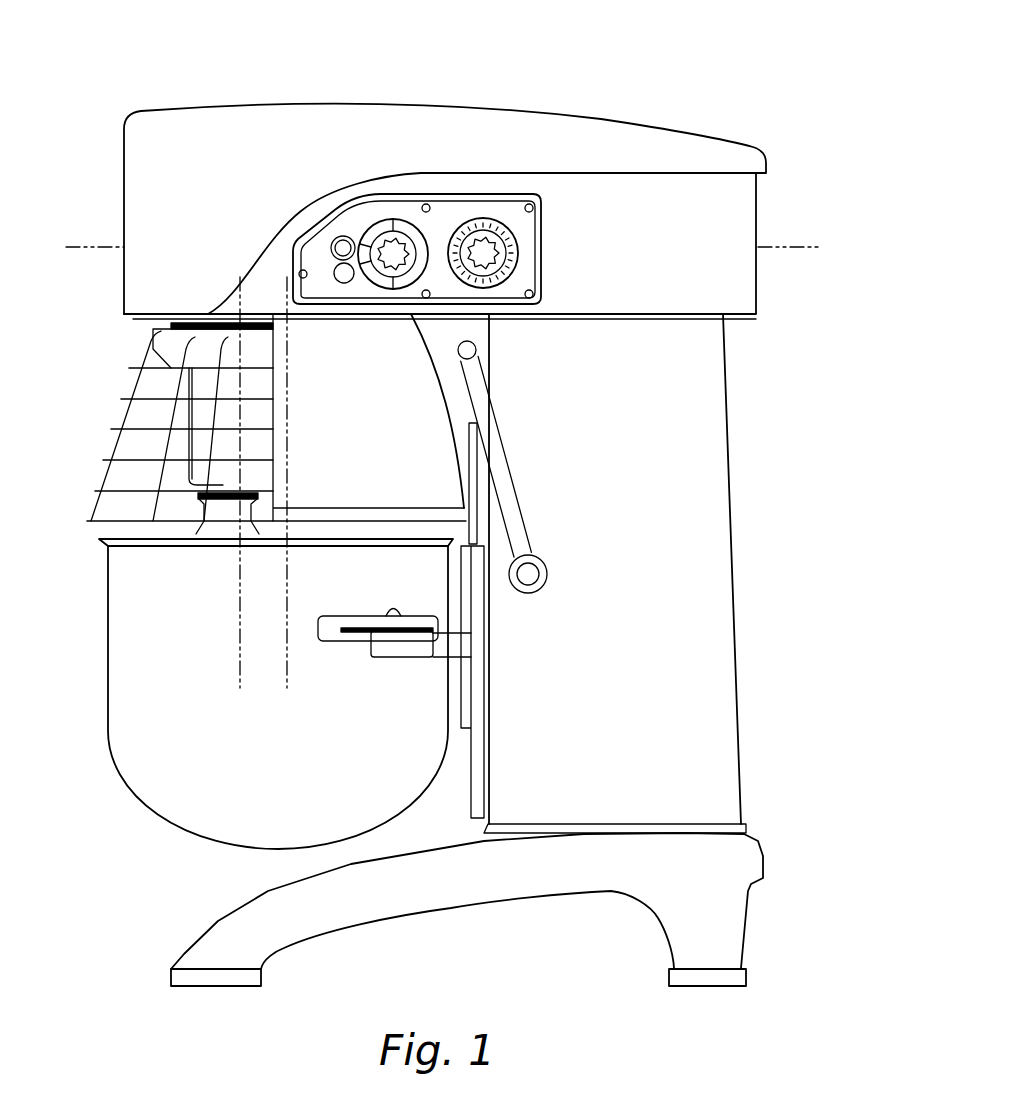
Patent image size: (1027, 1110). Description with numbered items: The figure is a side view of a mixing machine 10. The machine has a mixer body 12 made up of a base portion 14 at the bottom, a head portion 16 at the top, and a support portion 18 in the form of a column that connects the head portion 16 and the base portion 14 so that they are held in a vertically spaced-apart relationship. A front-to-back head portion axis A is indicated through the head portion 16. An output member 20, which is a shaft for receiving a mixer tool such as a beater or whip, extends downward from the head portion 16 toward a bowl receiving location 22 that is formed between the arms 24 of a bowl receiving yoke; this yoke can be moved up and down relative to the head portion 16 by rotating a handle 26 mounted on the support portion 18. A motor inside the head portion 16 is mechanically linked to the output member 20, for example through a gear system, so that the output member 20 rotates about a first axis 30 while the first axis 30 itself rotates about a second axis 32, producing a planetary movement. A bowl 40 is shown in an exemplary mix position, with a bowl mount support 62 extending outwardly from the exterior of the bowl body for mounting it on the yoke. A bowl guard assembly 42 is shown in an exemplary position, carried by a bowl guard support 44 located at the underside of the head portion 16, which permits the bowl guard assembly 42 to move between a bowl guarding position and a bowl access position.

The mixing machine 10 is at (713, 100).
The mixer body 12 is at (508, 650).
The base portion 14 is at (752, 862).
The head portion 16 is at (745, 263).
The support portion 18 is at (718, 607).
The output member 20 is at (223, 486).
The bowl receiving location 22 is at (241, 671).
The arms 24 is at (415, 658).
The handle 26 is at (507, 480).
The first axis 30 is at (236, 592).
The second axis 32 is at (288, 592).
The bowl 40 is at (117, 652).
The bowl guard assembly 42 is at (113, 413).
The bowl guard support 44 is at (150, 334).
The bowl mount support 62 is at (355, 634).
The head portion axis A is at (75, 245).